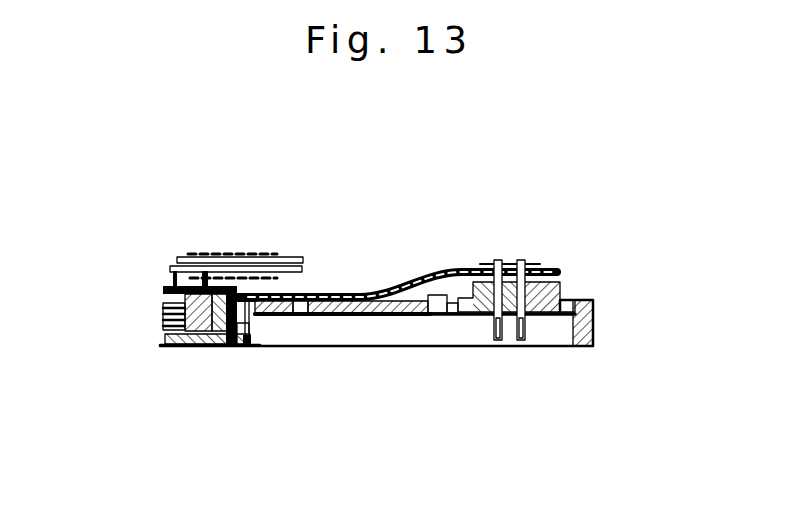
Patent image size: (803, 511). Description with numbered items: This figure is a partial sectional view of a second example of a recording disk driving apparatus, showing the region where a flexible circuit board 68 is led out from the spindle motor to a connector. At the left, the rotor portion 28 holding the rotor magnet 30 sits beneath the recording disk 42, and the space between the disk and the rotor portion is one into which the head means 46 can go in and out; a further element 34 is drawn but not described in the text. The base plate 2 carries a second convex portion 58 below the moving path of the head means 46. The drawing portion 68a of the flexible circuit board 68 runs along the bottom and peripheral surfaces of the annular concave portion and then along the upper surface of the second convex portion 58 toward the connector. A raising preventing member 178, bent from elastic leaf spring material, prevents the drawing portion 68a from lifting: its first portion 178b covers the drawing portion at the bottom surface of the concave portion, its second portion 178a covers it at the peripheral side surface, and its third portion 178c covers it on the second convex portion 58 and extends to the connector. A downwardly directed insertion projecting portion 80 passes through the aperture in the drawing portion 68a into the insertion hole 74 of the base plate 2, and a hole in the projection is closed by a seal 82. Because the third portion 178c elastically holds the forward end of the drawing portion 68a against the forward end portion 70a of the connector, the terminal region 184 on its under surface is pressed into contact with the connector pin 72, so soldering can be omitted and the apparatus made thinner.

The base plate 2 is at (600, 327).
The rotor portion 28 is at (207, 290).
The rotor magnet 30 is at (165, 298).
The connector 34 is at (164, 316).
The recording disk 42 is at (280, 302).
The head means 46 is at (180, 270).
The second convex portion 58 is at (302, 296).
The flexible circuit board 68 is at (162, 344).
The drawing portion 68a is at (422, 285).
The forward end portion of the connector 70a is at (556, 285).
The connector pin 72 is at (519, 335).
The insertion hole 74 is at (312, 297).
The insertion projecting portion 80 is at (302, 317).
The seal 82 is at (322, 317).
The raising preventing member 178 is at (190, 347).
The second portion 178a is at (213, 350).
The first portion 178b is at (228, 348).
The third portion 178c is at (250, 297).
The terminal region 184 is at (472, 318).